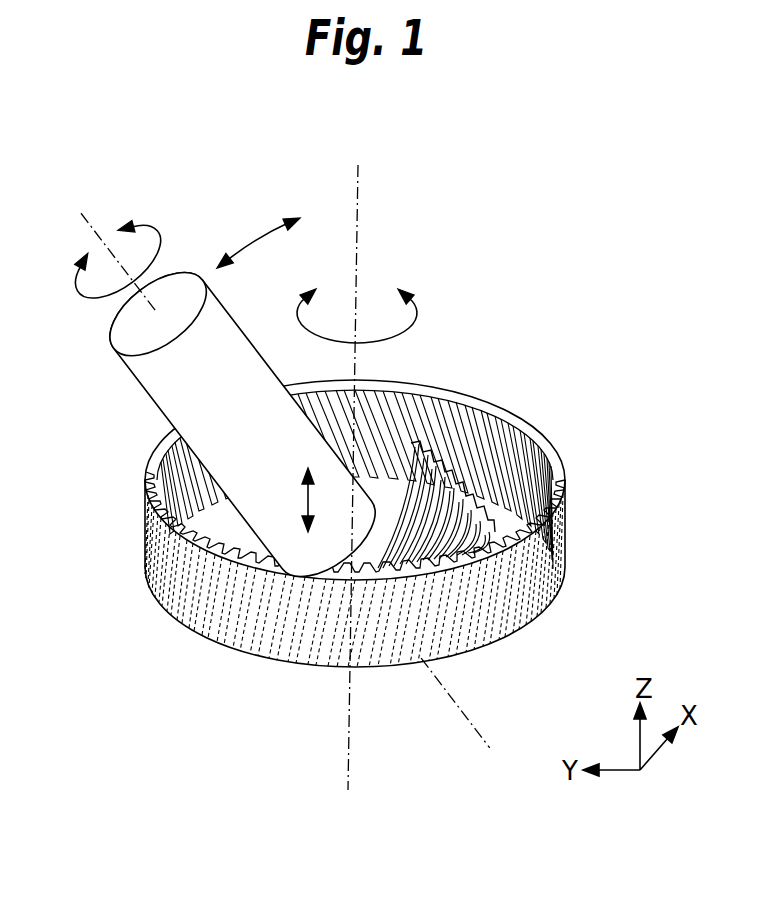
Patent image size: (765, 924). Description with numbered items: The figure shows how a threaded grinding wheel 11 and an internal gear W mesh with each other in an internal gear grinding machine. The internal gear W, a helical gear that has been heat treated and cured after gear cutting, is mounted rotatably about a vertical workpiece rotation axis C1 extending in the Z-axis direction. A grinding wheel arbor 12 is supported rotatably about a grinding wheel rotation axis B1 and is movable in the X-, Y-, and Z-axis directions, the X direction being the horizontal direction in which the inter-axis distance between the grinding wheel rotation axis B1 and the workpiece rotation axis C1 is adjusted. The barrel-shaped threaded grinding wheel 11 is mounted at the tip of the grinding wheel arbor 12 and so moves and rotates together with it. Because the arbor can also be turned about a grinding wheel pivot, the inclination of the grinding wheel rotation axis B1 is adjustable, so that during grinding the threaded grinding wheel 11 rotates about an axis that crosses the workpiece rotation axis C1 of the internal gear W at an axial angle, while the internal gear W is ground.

The threaded grinding wheel 11 is at (463, 493).
The grinding wheel arbor 12 is at (160, 388).
The internal gear W is at (404, 519).
The grinding wheel rotation axis B1 is at (285, 480).
The workpiece rotation axis C1 is at (357, 462).